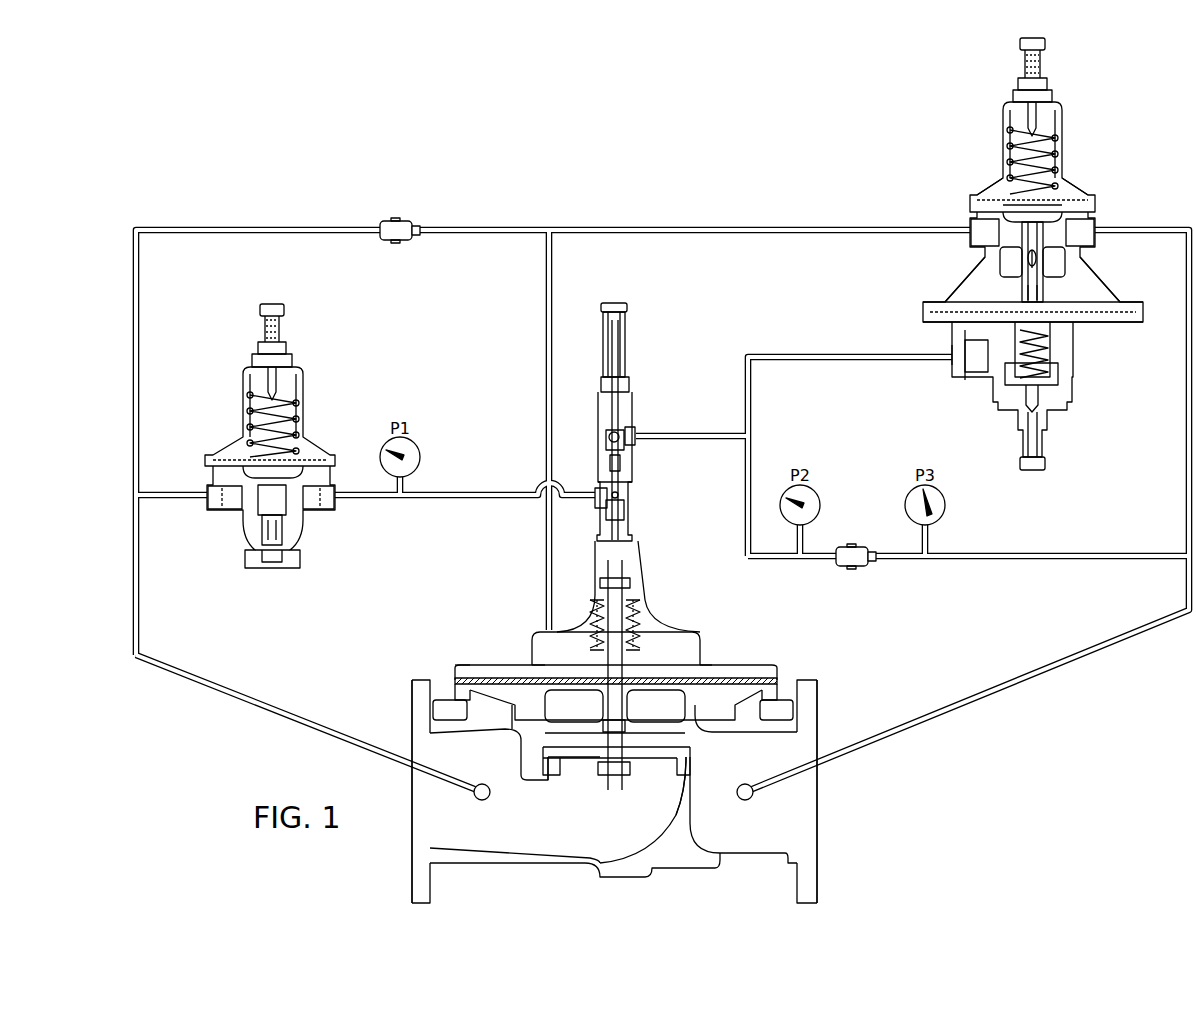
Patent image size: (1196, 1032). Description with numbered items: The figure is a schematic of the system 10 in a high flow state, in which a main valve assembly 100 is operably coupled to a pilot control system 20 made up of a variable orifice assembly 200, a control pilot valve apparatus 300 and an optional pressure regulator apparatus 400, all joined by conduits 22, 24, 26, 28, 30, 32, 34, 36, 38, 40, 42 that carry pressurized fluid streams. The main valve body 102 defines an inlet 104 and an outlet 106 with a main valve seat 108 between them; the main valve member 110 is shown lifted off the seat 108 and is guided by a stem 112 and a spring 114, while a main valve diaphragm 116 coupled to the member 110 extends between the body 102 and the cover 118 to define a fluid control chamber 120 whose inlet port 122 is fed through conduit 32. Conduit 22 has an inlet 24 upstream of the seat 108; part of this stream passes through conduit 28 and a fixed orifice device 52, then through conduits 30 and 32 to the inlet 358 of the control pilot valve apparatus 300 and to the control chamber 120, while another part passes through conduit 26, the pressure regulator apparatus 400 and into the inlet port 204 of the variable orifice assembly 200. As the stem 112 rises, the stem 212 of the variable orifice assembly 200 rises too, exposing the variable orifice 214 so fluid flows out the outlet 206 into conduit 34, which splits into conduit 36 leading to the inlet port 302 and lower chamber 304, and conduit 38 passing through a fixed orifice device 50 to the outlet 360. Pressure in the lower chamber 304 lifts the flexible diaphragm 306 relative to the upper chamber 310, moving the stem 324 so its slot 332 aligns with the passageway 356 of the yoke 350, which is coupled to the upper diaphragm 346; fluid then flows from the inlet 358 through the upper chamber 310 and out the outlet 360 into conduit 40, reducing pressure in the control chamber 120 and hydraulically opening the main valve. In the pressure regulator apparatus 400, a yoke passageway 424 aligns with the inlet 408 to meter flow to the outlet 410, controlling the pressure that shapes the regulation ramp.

The system 10 is at (200, 172).
The pilot control system 20 is at (733, 210).
The conduit 22 is at (265, 703).
The inlet 24 is at (485, 800).
The conduit 26 is at (153, 505).
The conduit 28 is at (185, 228).
The conduit 30 is at (625, 228).
The conduit 32 is at (548, 352).
The conduit 34 is at (682, 431).
The conduit 36 is at (798, 357).
The conduit 38 is at (948, 560).
The conduit 40 is at (900, 738).
The conduit 42 is at (750, 802).
The fixed orifice device 50 is at (845, 572).
The fixed orifice device 52 is at (387, 222).
The main valve assembly 100 is at (490, 875).
The main valve body 102 is at (646, 870).
The inlet 104 is at (418, 802).
The outlet 106 is at (818, 806).
The main valve seat 108 is at (549, 770).
The main valve member 110 is at (627, 722).
The stem 112 is at (612, 752).
The spring 114 is at (600, 620).
The main valve diaphragm 116 is at (535, 680).
The cover 118 is at (712, 660).
The fluid control chamber 120 is at (540, 660).
The inlet port 122 is at (550, 630).
The variable orifice assembly 200 is at (655, 505).
The inlet port 204 is at (595, 495).
The outlet 206 is at (636, 436).
The stem 212 is at (610, 506).
The variable orifice 214 is at (612, 437).
The control pilot valve apparatus 300 is at (1103, 173).
The inlet port 302 is at (958, 357).
The lower chamber 304 is at (980, 350).
The flexible diaphragm 306 is at (958, 310).
The upper chamber 310 is at (980, 290).
The stem 324 is at (1032, 297).
The slot 332 is at (1038, 263).
The upper diaphragm 346 is at (988, 195).
The yoke 350 is at (1043, 205).
The passageway 356 is at (1045, 257).
The inlet 358 is at (985, 232).
The outlet 360 is at (1078, 232).
The pressure regulator apparatus 400 is at (326, 381).
The inlet 408 is at (222, 488).
The outlet 410 is at (325, 502).
The passageway 424 is at (262, 530).